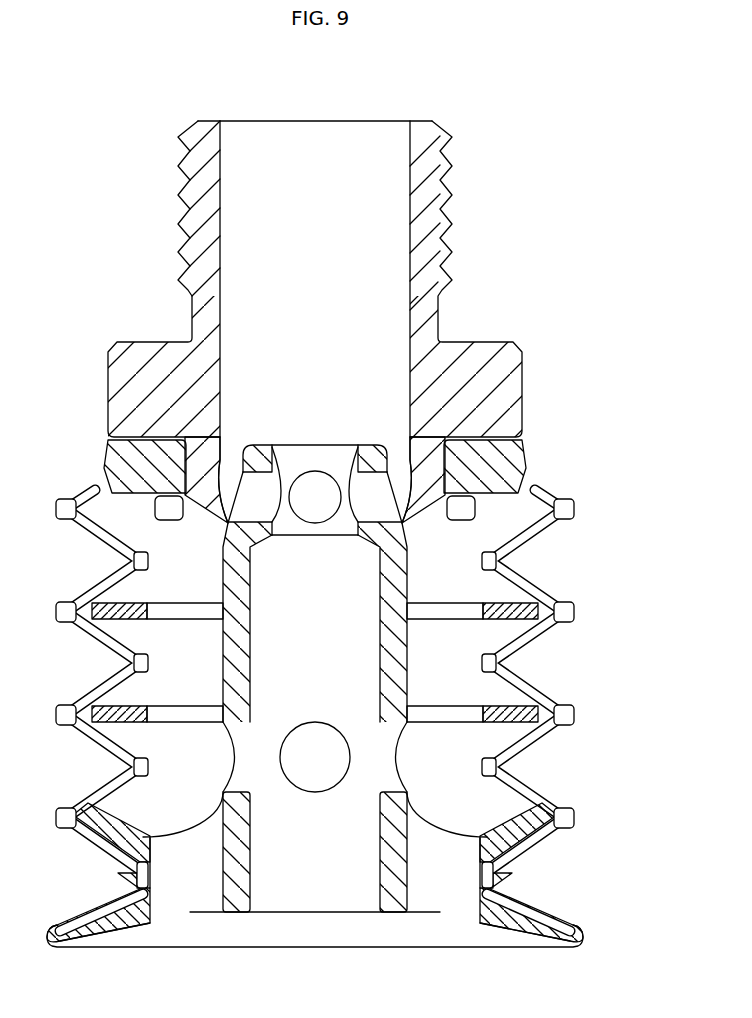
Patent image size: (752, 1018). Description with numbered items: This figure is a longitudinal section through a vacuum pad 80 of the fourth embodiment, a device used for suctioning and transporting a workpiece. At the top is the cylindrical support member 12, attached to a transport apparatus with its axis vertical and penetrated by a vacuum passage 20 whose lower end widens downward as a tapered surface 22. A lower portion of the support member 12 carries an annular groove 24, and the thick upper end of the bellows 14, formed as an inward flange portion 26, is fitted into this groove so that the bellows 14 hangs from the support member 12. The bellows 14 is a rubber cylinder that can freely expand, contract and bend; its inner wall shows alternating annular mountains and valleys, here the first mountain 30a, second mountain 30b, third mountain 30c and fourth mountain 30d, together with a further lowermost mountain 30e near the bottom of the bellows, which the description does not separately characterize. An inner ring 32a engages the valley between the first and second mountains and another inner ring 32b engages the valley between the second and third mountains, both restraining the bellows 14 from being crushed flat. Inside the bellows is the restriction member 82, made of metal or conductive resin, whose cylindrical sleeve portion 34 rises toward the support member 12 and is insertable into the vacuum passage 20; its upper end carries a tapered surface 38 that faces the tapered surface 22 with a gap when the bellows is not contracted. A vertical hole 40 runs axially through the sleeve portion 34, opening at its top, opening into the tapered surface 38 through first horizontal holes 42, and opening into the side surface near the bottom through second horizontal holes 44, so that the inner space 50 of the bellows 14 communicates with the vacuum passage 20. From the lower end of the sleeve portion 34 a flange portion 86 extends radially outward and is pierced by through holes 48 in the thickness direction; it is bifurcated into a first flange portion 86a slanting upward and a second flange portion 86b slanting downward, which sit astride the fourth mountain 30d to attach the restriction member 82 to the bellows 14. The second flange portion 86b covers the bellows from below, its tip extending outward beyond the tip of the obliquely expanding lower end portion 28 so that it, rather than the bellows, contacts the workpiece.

The vacuum pad 80 is at (101, 105).
The support member 12 is at (158, 183).
The vacuum passage 20 is at (321, 133).
The tapered surface 22 is at (230, 476).
The annular groove 24 is at (135, 462).
The inward flange portion 26 is at (497, 463).
The bellows 14 is at (594, 602).
The first mountain 30a is at (133, 561).
The second mountain 30b is at (133, 663).
The third mountain 30c is at (133, 767).
The fourth mountain 30d is at (133, 870).
The lower fold 30e is at (540, 845).
The inner ring 32a is at (518, 604).
The inner ring 32b is at (520, 707).
The restriction member 82 is at (214, 643).
The inner space 50 is at (137, 694).
The tapered surface 38 is at (385, 455).
The first horizontal holes 42 is at (363, 487).
The vertical hole 40 is at (262, 568).
The sleeve portion 34 is at (395, 564).
The second horizontal holes 44 is at (384, 752).
The through holes 48 is at (190, 895).
The lower end portion 28 is at (562, 912).
The flange portion 86 is at (679, 821).
The first flange portion 86a is at (530, 822).
The second flange portion 86b is at (572, 937).